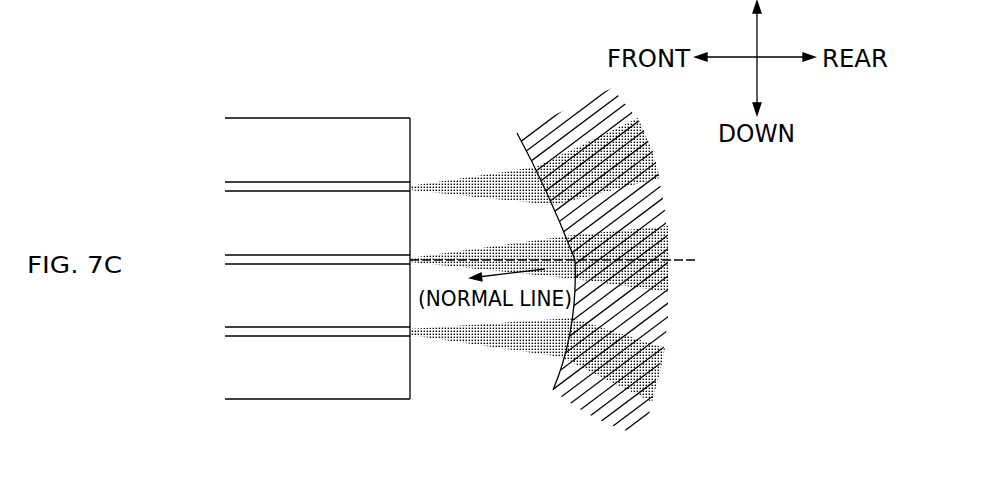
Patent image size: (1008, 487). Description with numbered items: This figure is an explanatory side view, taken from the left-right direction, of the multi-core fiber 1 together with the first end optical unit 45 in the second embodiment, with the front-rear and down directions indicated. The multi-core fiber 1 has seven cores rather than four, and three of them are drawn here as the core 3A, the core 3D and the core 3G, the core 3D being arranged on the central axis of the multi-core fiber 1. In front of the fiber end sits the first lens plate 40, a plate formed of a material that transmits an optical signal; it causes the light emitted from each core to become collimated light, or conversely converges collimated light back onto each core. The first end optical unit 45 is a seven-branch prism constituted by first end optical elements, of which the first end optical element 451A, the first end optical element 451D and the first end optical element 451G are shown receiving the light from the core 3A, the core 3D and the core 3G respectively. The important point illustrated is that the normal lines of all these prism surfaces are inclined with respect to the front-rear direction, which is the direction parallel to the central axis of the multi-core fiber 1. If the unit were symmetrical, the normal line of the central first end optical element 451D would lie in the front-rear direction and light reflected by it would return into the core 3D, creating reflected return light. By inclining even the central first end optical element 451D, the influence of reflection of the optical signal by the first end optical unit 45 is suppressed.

The multi-core fiber 1 is at (250, 92).
The core 3A is at (344, 182).
The core 3D is at (240, 255).
The core 3G is at (240, 327).
The first lens plate 40 is at (576, 120).
The first end optical unit 45 is at (516, 98).
The first end optical element 451A is at (525, 152).
The first end optical element 451D is at (568, 236).
The first end optical element 451G is at (555, 385).